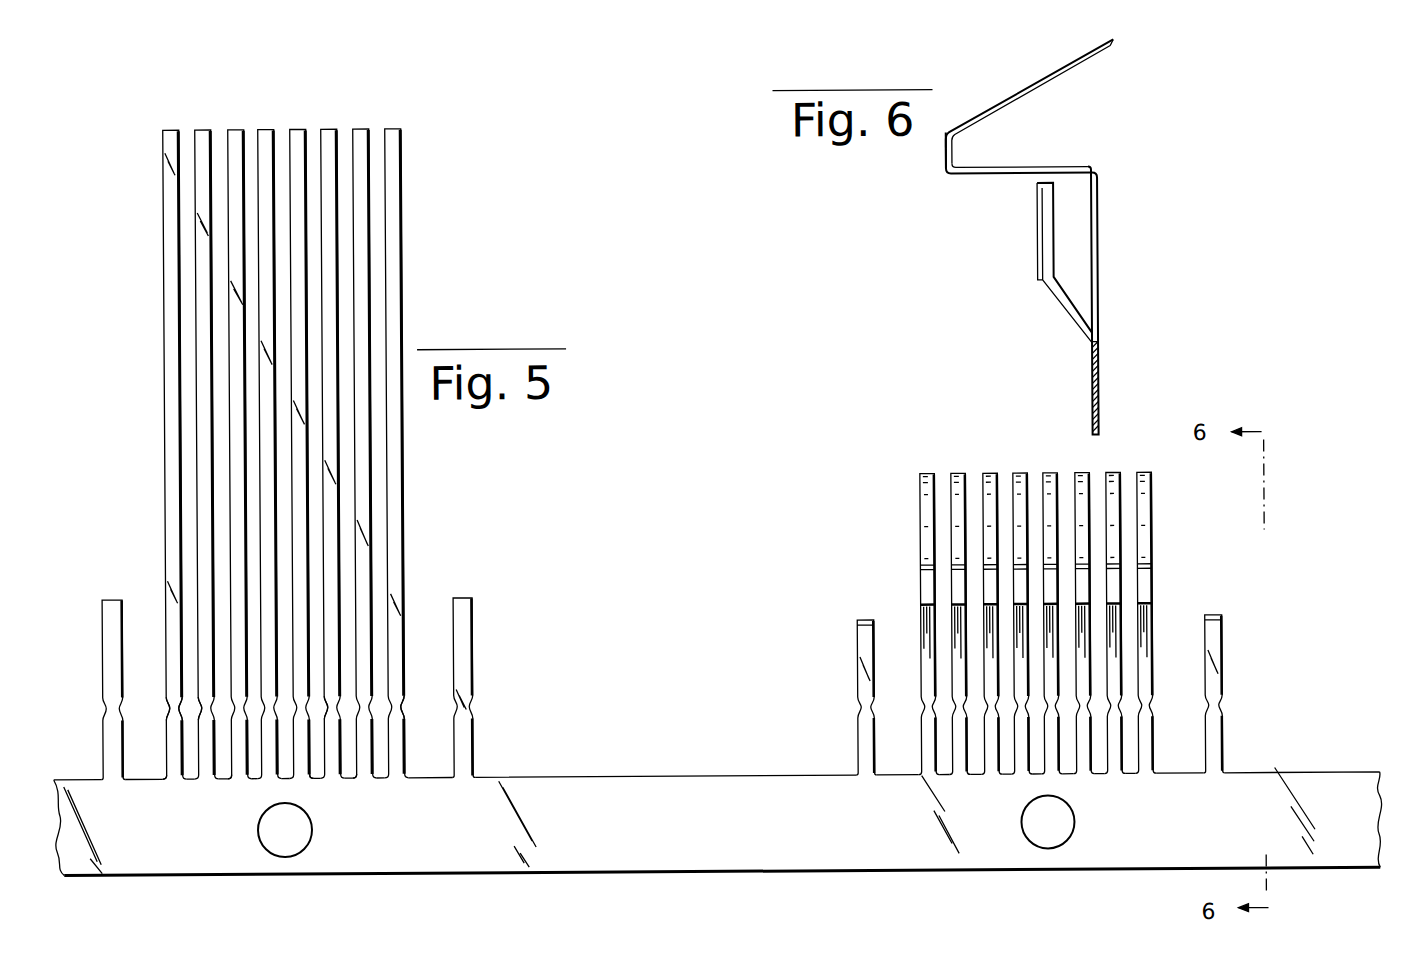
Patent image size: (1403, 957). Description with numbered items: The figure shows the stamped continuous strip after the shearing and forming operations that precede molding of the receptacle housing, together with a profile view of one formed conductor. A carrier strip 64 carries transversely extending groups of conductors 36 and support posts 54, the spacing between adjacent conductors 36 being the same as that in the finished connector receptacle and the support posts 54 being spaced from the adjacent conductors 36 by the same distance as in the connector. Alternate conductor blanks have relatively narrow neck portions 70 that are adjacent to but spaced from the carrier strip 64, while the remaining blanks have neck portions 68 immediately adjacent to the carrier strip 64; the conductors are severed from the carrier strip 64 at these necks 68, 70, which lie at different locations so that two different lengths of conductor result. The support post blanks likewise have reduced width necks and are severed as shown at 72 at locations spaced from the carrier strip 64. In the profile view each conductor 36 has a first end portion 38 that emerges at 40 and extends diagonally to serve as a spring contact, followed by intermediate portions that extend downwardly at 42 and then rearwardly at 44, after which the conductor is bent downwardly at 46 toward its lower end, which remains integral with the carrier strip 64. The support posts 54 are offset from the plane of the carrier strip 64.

In FIG. 5, the conductor 36 is at (156, 498).
In FIG. 5, the first end portion 38 is at (918, 503).
In FIG. 6, the first end portion 38 is at (1051, 72).
In FIG. 5, the emergence location 40 is at (918, 567).
In FIG. 6, the emergence location 40 is at (947, 134).
In FIG. 5, the downwardly extending intermediate portion 42 is at (918, 588).
In FIG. 6, the downwardly extending intermediate portion 42 is at (947, 157).
In FIG. 5, the rearwardly extending intermediate portion 44 is at (925, 612).
In FIG. 6, the rearwardly extending intermediate portion 44 is at (1021, 167).
In FIG. 6, the downward bend 46 is at (1101, 169).
In FIG. 5, the support post 54 is at (100, 673).
In FIG. 6, the support post 54 is at (1044, 240).
In FIG. 5, the carrier strip 64 is at (686, 777).
In FIG. 6, the carrier strip 64 is at (1094, 400).
In FIG. 5, the neck portion 68 is at (233, 779).
In FIG. 5, the neck portion 70 is at (197, 723).
In FIG. 5, the severing location 72 is at (462, 597).